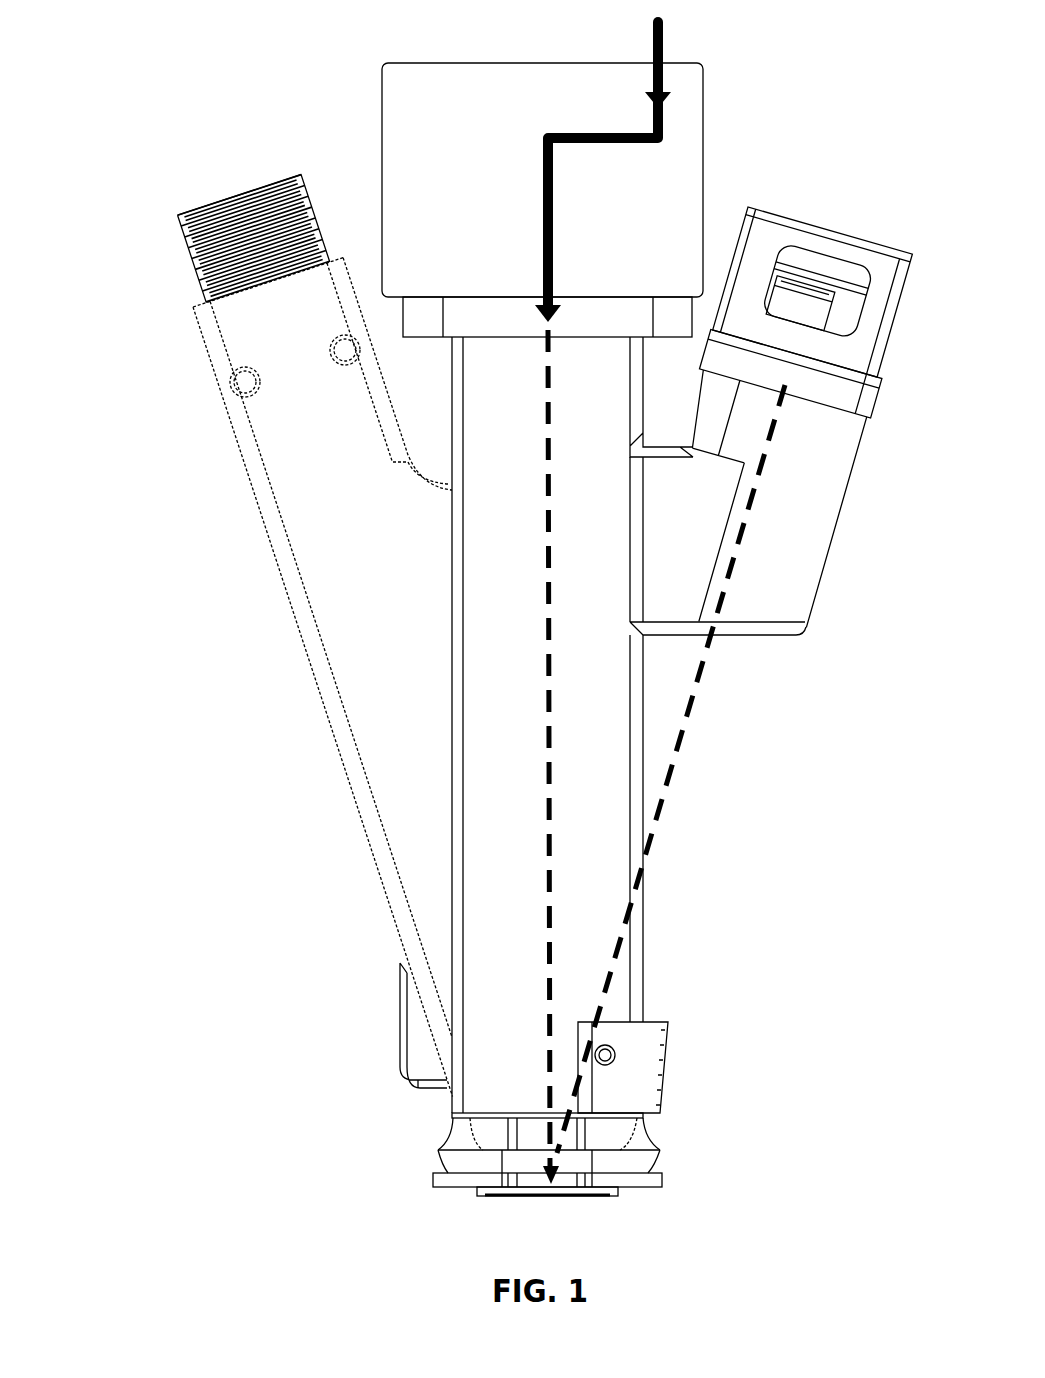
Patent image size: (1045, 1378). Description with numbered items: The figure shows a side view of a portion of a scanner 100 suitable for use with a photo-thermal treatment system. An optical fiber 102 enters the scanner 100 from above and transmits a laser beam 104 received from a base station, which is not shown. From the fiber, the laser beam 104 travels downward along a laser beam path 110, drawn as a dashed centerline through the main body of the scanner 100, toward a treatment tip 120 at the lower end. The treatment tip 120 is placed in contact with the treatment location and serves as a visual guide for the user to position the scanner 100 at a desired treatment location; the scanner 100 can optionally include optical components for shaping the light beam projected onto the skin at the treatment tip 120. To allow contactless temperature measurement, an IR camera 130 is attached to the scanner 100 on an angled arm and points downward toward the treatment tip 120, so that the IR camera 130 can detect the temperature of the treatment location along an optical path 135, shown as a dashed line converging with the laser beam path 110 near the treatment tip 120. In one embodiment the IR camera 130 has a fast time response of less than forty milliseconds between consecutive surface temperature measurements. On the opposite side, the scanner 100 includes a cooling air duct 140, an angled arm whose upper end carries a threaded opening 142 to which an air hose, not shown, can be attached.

The scanner 100 is at (250, 107).
The optical fiber 102 is at (665, 42).
The laser beam 104 is at (553, 258).
The laser beam path 110 is at (557, 583).
The treatment tip 120 is at (664, 1180).
The IR camera 130 is at (845, 228).
The optical path 135 is at (690, 742).
The cooling air duct 140 is at (225, 400).
The threaded opening 142 is at (190, 247).